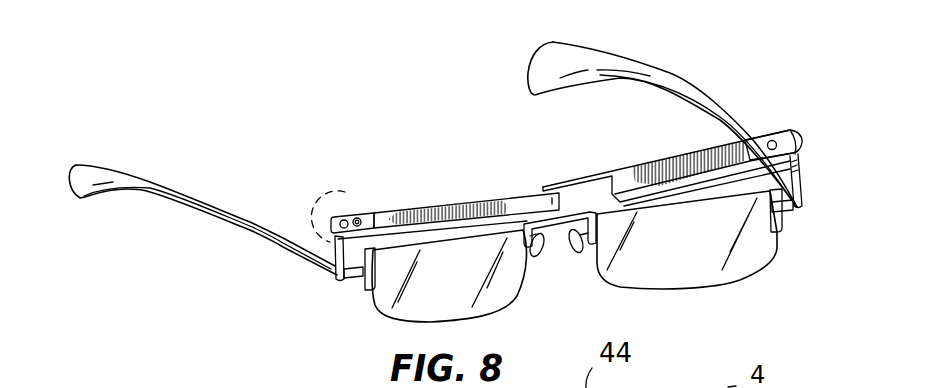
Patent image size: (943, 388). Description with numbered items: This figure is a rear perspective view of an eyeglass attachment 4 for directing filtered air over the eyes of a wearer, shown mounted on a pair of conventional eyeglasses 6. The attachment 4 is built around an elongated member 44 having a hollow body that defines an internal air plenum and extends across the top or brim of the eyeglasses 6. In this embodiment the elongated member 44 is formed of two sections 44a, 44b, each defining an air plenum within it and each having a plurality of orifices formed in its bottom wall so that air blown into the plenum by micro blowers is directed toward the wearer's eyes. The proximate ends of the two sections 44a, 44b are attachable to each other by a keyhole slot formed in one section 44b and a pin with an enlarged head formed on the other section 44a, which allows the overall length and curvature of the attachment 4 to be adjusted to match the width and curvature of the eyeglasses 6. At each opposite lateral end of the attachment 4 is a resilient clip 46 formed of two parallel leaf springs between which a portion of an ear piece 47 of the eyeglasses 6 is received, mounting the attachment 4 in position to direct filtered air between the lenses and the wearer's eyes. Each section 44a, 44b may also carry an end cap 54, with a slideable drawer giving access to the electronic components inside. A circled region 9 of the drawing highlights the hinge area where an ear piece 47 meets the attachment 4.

The attachment 4 is at (773, 66).
The eyeglasses 6 is at (795, 260).
The hinge detail region 9 is at (331, 190).
The elongated member 44 is at (469, 170).
The section 44a is at (394, 209).
The section 44b is at (619, 167).
The resilient clip 46 is at (804, 174).
The ear piece 47 is at (229, 208).
The end cap 54 is at (805, 132).